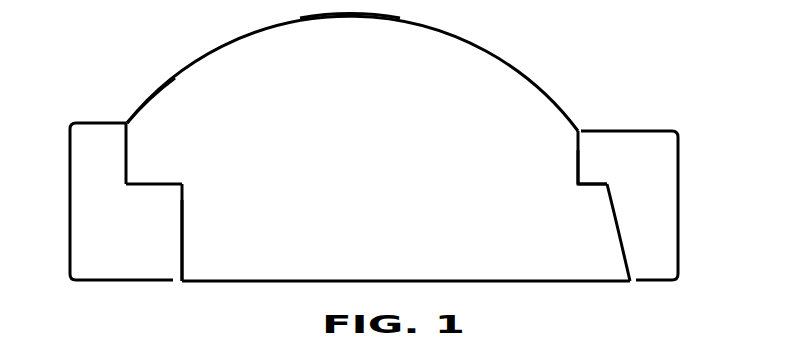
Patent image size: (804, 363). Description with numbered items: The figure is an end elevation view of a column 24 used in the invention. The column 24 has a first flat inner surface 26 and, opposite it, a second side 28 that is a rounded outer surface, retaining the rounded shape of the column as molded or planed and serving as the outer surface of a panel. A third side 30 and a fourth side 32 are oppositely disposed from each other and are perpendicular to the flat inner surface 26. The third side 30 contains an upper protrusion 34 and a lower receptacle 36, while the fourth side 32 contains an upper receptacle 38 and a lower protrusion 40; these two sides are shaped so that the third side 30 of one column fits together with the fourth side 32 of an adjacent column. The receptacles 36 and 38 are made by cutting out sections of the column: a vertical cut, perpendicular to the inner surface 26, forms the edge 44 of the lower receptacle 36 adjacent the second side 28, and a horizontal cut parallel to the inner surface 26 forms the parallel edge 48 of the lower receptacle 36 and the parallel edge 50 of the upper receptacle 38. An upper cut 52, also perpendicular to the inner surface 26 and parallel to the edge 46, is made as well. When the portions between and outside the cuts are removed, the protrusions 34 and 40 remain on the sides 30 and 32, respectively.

The column 24 is at (513, 63).
The first flat inner surface 26 is at (277, 284).
The second side 28 is at (450, 31).
The third side 30 is at (62, 193).
The fourth side 32 is at (681, 195).
The upper protrusion 34 is at (167, 108).
The lower receptacle 36 is at (181, 243).
The upper receptacle 38 is at (580, 166).
The lower protrusion 40 is at (565, 256).
The edge 44 is at (185, 224).
The edge 46 is at (577, 158).
The parallel edge 48 is at (157, 186).
The parallel edge 50 is at (596, 187).
The upper cut 52 is at (128, 154).